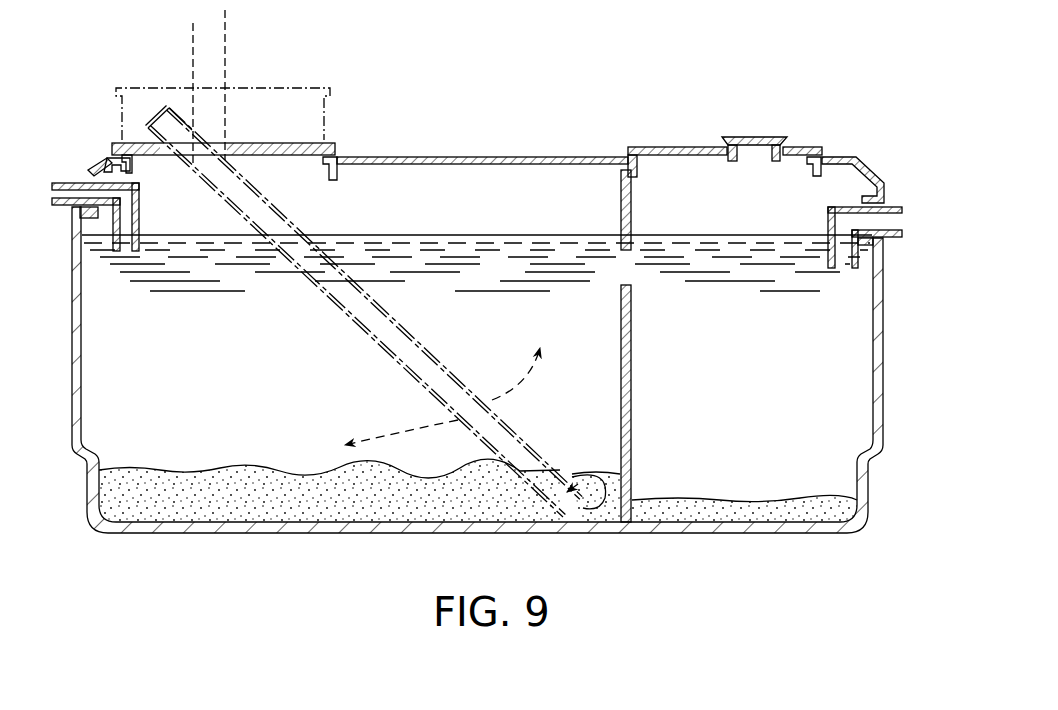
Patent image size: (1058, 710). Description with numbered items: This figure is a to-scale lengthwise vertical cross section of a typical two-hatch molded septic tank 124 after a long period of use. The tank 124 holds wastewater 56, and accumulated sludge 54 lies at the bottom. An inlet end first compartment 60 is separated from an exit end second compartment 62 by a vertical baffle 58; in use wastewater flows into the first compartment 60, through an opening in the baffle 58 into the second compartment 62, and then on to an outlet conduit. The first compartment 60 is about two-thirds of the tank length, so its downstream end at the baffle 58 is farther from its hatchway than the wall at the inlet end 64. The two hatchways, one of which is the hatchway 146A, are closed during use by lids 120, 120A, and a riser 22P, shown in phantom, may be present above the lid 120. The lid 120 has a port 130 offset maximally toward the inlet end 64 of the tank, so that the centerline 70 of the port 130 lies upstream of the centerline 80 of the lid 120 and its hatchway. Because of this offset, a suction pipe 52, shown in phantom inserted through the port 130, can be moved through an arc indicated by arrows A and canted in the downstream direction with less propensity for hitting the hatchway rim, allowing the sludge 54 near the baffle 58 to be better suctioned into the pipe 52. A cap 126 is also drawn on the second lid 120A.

The septic tank 124 is at (888, 400).
The inlet end 64 is at (98, 166).
The wastewater 56 is at (203, 326).
The sludge 54 is at (288, 508).
The baffle 58 is at (633, 385).
The first compartment 60 is at (545, 217).
The second compartment 62 is at (725, 217).
The lid 120A is at (666, 146).
The cap 126 is at (759, 136).
The hatchway 146A is at (327, 174).
The lid 120 is at (261, 140).
The riser 22P is at (331, 117).
The centerline of port 70 is at (191, 57).
The centerline of lid 80 is at (227, 23).
The suction pipe 52 is at (345, 323).
The arrows A is at (512, 377).
The port 130 is at (168, 158).